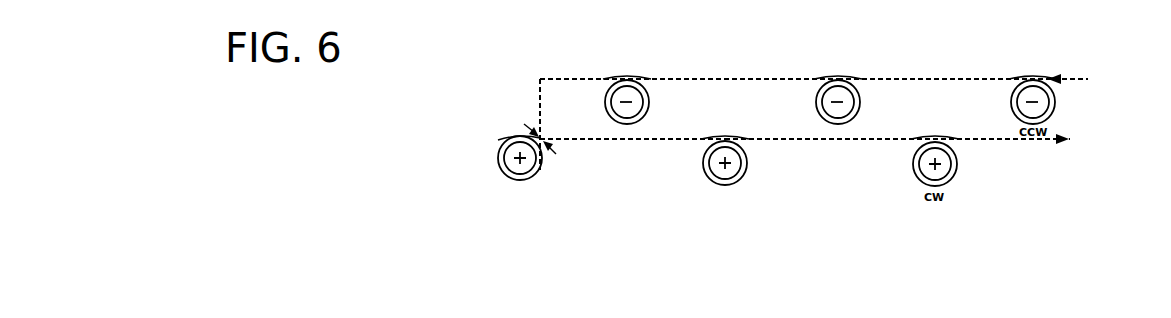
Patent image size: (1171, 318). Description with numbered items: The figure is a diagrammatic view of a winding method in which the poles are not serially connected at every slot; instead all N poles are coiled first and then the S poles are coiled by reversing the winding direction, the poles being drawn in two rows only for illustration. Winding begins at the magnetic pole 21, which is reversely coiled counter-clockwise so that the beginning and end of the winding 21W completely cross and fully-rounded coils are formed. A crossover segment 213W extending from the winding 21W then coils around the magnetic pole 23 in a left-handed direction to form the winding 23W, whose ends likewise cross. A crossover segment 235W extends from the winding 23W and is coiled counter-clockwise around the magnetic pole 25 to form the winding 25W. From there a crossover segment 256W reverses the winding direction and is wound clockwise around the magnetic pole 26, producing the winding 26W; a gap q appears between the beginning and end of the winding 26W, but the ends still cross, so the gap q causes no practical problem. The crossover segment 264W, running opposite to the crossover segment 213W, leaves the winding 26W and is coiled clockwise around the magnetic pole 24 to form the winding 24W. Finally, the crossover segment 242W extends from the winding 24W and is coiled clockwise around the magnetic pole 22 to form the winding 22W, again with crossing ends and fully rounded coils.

The magnetic pole 21 is at (1050, 102).
The winding 21W is at (1052, 115).
The magnetic pole 22 is at (956, 165).
The winding 22W is at (954, 176).
The magnetic pole 23 is at (855, 102).
The winding 23W is at (856, 112).
The magnetic pole 24 is at (744, 164).
The winding 24W is at (741, 176).
The magnetic pole 25 is at (645, 102).
The winding 25W is at (643, 115).
The magnetic pole 26 is at (505, 158).
The winding 26W is at (505, 175).
The crossover segment 256W is at (555, 78).
The crossover segment 235W is at (722, 78).
The crossover segment 213W is at (920, 78).
The crossover segment 264W is at (613, 142).
The crossover segment 242W is at (823, 140).
The gap q is at (555, 143).